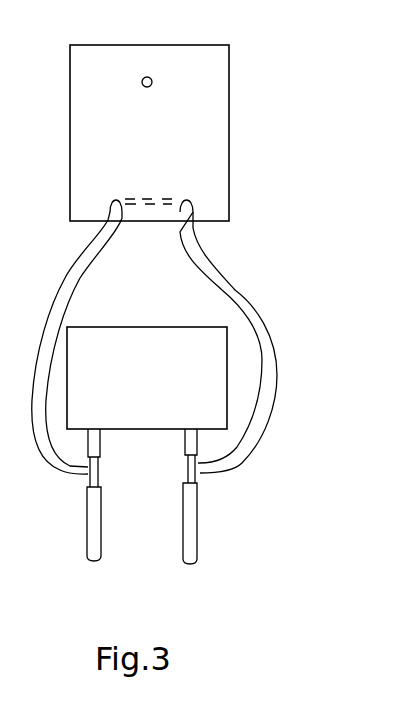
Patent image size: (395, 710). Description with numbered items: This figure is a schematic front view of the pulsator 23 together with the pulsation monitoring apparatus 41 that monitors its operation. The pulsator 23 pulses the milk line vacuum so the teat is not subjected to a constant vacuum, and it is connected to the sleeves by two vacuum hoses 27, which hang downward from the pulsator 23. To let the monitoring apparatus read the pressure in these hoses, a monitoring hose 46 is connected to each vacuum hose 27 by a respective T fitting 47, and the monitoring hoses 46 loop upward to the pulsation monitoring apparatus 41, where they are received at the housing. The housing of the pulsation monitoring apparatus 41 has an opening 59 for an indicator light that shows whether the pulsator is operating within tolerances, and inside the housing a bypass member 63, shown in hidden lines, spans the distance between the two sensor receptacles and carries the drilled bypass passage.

The pulsation monitoring apparatus 41 is at (152, 45).
The opening 59 is at (153, 82).
The bypass member 63 is at (155, 196).
The monitoring hoses 46 is at (187, 262).
The pulsator 23 is at (113, 327).
The T fittings 47 is at (186, 462).
The vacuum hoses 27 is at (182, 537).